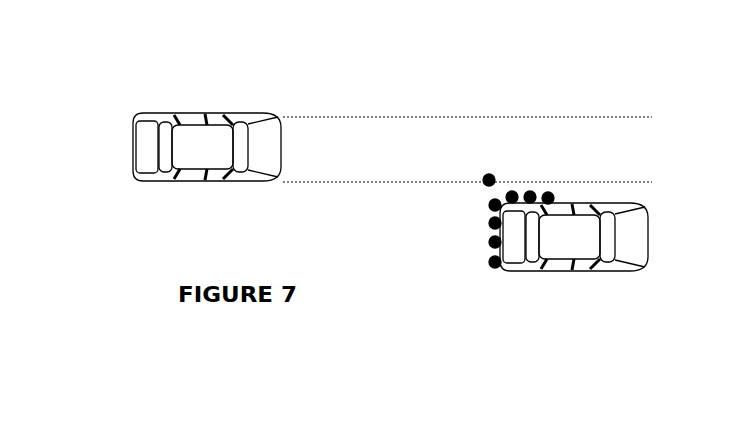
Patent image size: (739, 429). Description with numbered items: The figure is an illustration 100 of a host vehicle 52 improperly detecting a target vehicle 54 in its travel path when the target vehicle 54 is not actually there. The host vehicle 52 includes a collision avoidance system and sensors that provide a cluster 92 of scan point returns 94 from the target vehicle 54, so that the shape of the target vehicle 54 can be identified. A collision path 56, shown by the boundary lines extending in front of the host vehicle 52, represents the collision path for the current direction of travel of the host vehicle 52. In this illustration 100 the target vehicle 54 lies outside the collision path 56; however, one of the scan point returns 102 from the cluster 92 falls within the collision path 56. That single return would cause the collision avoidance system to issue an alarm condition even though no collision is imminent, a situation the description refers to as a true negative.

The illustration 100 is at (424, 49).
The host vehicle 52 is at (133, 148).
The target vehicle 54 is at (542, 269).
The collision path 56 is at (508, 118).
The scan point return 102 is at (483, 179).
The scan point returns 94 is at (489, 242).
The cluster 92 is at (476, 253).